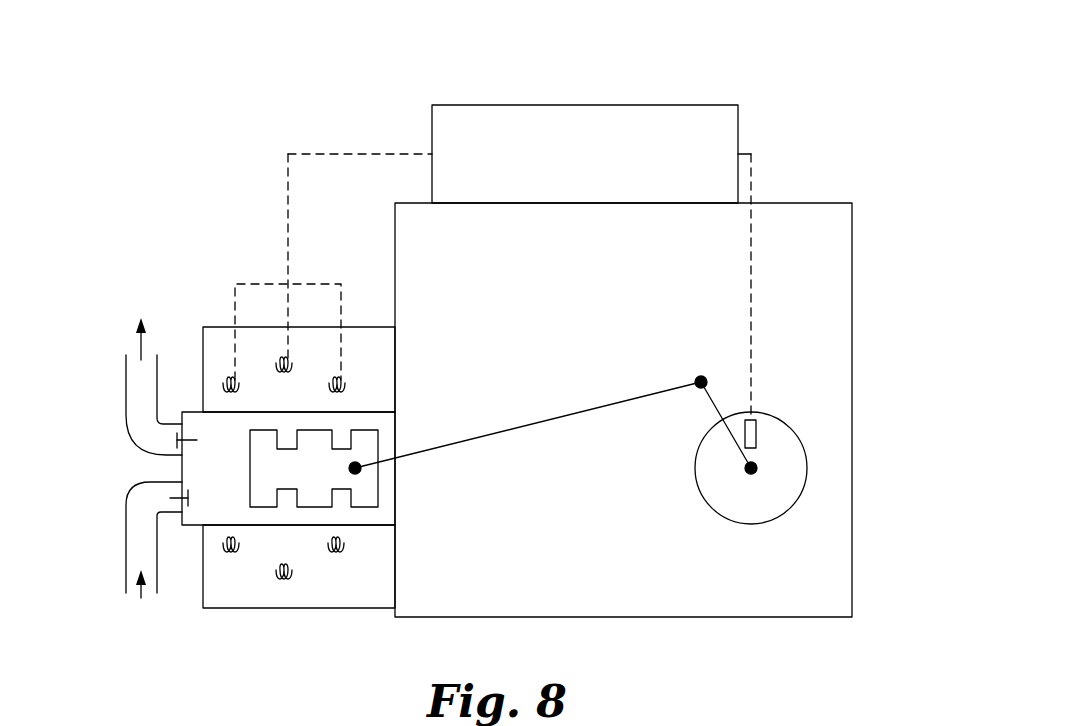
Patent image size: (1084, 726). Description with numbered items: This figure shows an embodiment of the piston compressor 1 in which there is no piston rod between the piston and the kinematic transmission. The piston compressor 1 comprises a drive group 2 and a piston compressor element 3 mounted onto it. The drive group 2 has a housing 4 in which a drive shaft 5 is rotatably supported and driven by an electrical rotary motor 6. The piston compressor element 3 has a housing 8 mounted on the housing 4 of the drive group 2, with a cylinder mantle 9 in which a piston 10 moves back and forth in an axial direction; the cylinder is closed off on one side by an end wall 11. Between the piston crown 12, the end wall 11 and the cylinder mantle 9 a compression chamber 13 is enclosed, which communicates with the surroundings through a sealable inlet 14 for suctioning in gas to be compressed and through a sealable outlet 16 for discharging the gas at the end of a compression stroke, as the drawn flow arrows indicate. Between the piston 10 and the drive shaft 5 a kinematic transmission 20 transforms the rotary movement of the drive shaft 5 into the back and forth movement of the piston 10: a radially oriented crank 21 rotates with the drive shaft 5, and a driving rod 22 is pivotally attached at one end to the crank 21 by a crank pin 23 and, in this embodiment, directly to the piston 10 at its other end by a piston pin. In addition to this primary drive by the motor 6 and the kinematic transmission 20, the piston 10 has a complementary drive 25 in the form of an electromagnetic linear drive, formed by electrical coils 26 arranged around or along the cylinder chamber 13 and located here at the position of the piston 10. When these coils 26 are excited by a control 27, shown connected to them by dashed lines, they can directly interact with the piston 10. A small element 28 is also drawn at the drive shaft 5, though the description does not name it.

The piston compressor 1 is at (904, 134).
The drive group 2 is at (858, 285).
The piston compressor element 3 is at (195, 401).
The housing 4 is at (852, 578).
The drive shaft 5 is at (751, 466).
The electrical rotary motor 6 is at (790, 492).
The housing 8 is at (235, 608).
The cylinder mantle 9 is at (362, 525).
The piston 10 is at (364, 430).
The end wall 11 is at (182, 469).
The piston crown 12 is at (250, 488).
The compression chamber 13 is at (225, 468).
The sealable inlet 14 is at (126, 553).
The sealable outlet 16 is at (126, 383).
The kinematic transmission 20 is at (650, 522).
The crank 21 is at (730, 433).
The driving rod 22 is at (578, 410).
The crank pin 23 is at (701, 388).
The complementary drive 25 is at (260, 250).
The electrical coils 26 is at (295, 582).
The control 27 is at (447, 105).
The position sensor 28 is at (757, 425).